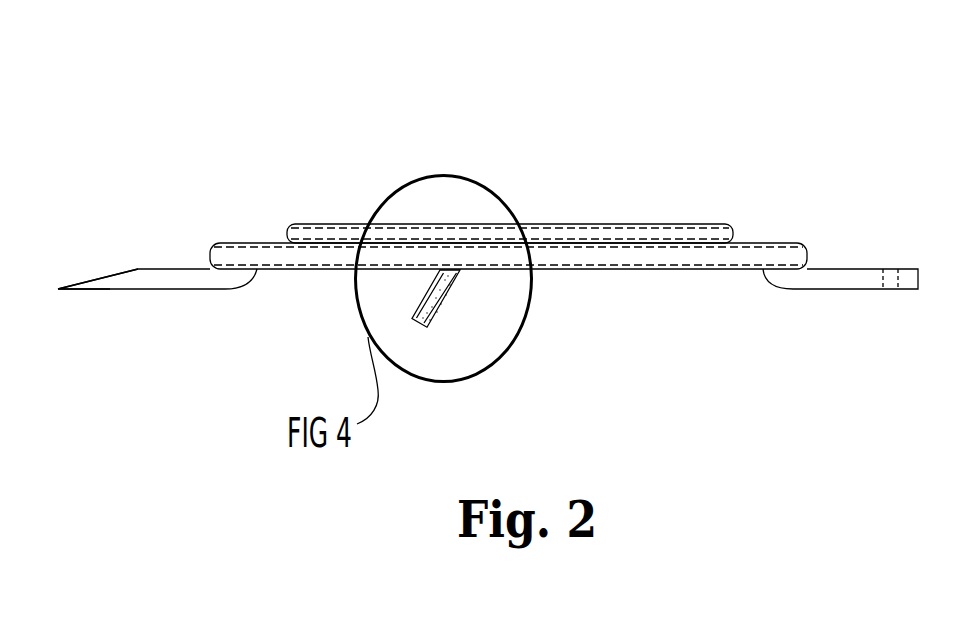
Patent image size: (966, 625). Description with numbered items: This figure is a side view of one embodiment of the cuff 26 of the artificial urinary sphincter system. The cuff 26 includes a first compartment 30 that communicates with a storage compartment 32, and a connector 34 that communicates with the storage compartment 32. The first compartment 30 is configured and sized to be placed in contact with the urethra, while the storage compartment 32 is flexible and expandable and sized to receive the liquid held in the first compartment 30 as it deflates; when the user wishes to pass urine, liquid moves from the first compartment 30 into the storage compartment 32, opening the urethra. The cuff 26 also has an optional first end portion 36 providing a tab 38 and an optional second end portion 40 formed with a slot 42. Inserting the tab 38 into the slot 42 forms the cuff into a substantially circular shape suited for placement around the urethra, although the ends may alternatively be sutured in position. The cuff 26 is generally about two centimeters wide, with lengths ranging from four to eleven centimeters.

The cuff 26 is at (747, 110).
The first compartment 30 is at (583, 233).
The storage compartment 32 is at (676, 252).
The connector 34 is at (443, 305).
The first end portion 36 is at (152, 282).
The tab 38 is at (97, 283).
The second end portion 40 is at (837, 280).
The slot 42 is at (893, 282).